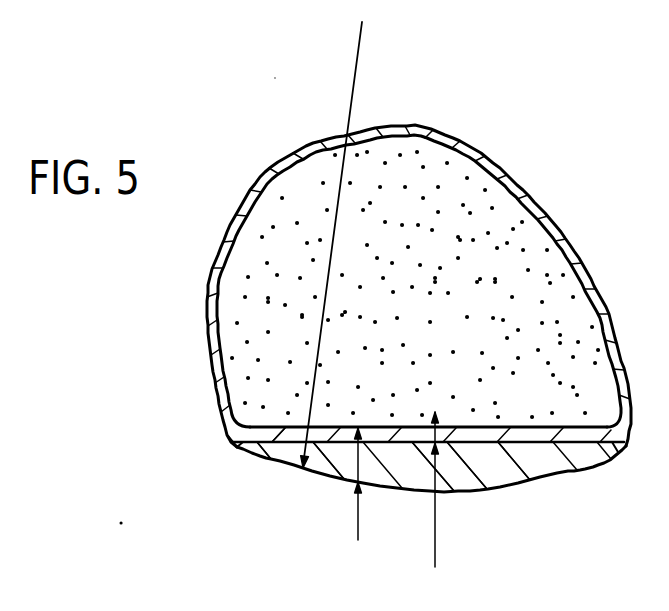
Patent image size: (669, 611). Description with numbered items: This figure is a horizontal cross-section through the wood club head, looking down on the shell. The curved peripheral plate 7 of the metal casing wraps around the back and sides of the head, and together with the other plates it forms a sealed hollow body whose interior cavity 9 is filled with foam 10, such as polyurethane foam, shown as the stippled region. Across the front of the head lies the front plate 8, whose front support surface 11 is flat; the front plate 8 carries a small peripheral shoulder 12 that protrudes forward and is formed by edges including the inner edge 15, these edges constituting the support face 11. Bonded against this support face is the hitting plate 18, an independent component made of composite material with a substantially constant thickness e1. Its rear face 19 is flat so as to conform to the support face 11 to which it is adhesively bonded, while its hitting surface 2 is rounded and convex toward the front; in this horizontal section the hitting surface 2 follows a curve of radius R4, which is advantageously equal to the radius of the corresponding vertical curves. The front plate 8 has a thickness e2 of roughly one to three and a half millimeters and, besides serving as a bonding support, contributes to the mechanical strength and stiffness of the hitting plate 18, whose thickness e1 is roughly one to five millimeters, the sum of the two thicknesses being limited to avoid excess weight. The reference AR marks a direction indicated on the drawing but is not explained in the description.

The hitting surface 2 is at (560, 473).
The peripheral plate 7 is at (498, 167).
The front plate 8 is at (338, 436).
The interior cavity 9 is at (238, 293).
The foam 10 is at (303, 206).
The front support surface 11 is at (513, 452).
The peripheral shoulder 12 is at (238, 448).
The inner edge 15 is at (616, 446).
The hitting plate 18 is at (407, 477).
The rear face 19 is at (566, 438).
The radius R4 is at (331, 245).
The axis of rotation AR is at (264, 64).
The thickness of the hitting plate e1 is at (344, 487).
The thickness of the front plate e2 is at (456, 489).